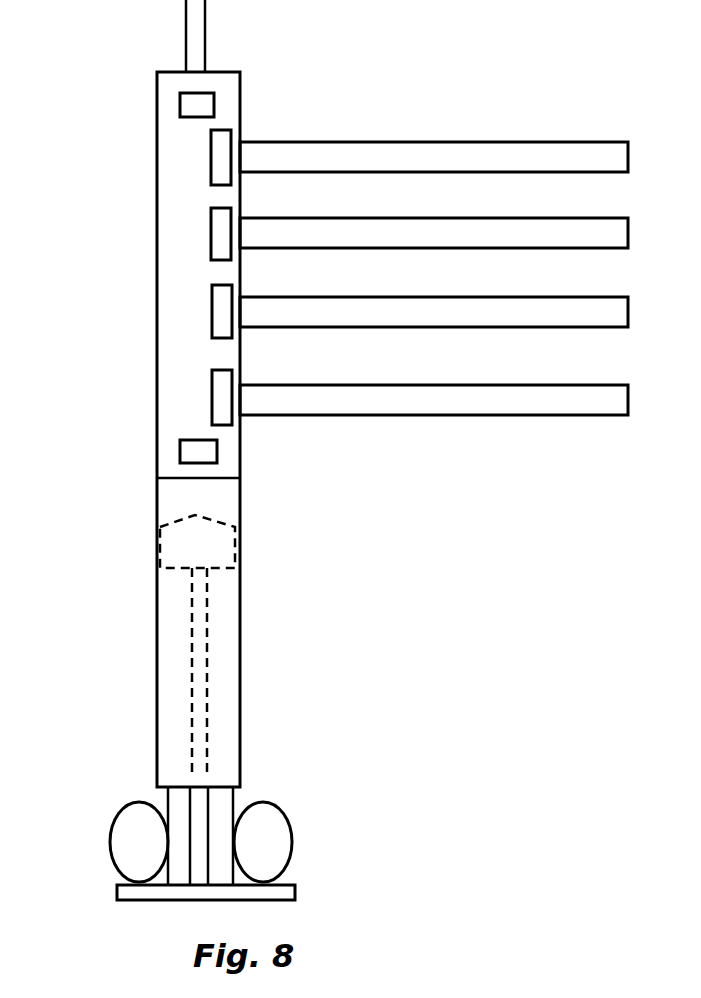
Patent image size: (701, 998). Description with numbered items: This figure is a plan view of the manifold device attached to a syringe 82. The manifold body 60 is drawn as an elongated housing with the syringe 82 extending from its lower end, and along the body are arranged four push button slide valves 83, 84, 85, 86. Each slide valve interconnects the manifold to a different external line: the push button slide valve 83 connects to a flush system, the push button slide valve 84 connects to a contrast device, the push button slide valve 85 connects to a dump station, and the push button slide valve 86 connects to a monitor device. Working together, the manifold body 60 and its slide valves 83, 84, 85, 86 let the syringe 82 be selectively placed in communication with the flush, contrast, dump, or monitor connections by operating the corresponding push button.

The manifold body 60 is at (157, 350).
The syringe 82 is at (242, 697).
The push button slide valve 83 is at (212, 395).
The push button slide valve 84 is at (212, 310).
The push button slide valve 85 is at (211, 234).
The push button slide valve 86 is at (211, 166).